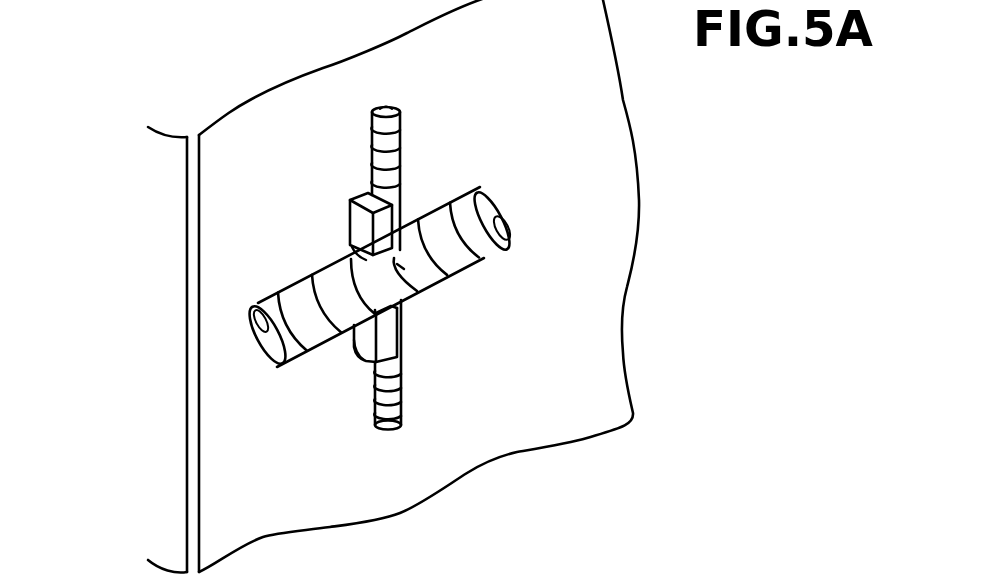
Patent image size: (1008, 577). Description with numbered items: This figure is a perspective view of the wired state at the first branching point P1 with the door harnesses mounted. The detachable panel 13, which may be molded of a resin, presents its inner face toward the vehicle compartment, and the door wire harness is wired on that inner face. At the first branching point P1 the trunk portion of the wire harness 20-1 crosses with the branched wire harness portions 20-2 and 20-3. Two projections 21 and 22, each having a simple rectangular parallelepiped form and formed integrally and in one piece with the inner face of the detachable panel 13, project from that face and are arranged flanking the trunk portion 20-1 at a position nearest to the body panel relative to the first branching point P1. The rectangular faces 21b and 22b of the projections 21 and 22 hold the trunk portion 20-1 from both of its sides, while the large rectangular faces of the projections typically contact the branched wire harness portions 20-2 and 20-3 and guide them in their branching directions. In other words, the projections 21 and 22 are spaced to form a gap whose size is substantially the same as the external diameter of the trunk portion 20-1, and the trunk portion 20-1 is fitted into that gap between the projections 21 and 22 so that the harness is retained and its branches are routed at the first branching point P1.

The detachable panel 13 is at (218, 283).
The trunk portion of the wire harness 20-1 is at (463, 253).
The branched wire harness portion 20-2 is at (405, 145).
The branched wire harness portion 20-3 is at (376, 408).
The projection 21 is at (348, 228).
The rectangular face 21b is at (350, 258).
The projection 22 is at (355, 358).
The rectangular face 22b is at (352, 355).
The first branching point P1 is at (402, 266).